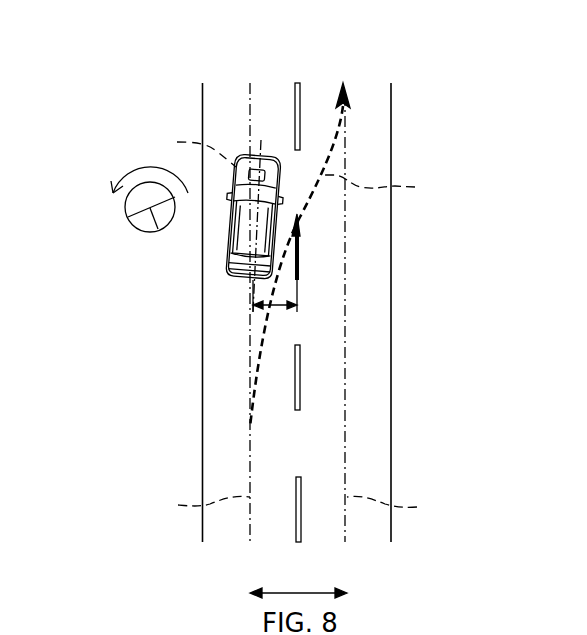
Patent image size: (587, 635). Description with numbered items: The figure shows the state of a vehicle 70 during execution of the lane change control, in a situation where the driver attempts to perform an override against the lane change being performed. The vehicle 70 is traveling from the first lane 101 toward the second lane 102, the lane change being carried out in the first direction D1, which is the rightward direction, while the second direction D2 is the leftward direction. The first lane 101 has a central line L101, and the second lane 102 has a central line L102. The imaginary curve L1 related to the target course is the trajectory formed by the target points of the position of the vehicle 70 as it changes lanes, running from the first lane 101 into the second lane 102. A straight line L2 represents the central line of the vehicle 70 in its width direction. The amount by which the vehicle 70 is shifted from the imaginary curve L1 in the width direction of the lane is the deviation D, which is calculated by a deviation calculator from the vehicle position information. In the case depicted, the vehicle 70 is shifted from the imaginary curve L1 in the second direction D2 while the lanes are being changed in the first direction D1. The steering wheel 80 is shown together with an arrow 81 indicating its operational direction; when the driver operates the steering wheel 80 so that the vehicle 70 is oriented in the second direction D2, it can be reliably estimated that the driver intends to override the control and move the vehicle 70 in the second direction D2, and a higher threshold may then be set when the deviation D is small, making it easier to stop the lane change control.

The vehicle 70 is at (229, 248).
The steering wheel 80 is at (128, 217).
The arrow indicating operational direction of the steering wheel 81 is at (120, 176).
The first lane 101 is at (249, 70).
The second lane 102 is at (344, 70).
The imaginary curve related to the target course L1 is at (381, 187).
The central line of the vehicle in its width direction L2 is at (190, 150).
The central line of the first lane L101 is at (186, 506).
The central line of the second lane L102 is at (408, 506).
The deviation D is at (281, 312).
The first direction D1 is at (340, 594).
The second direction D2 is at (261, 594).